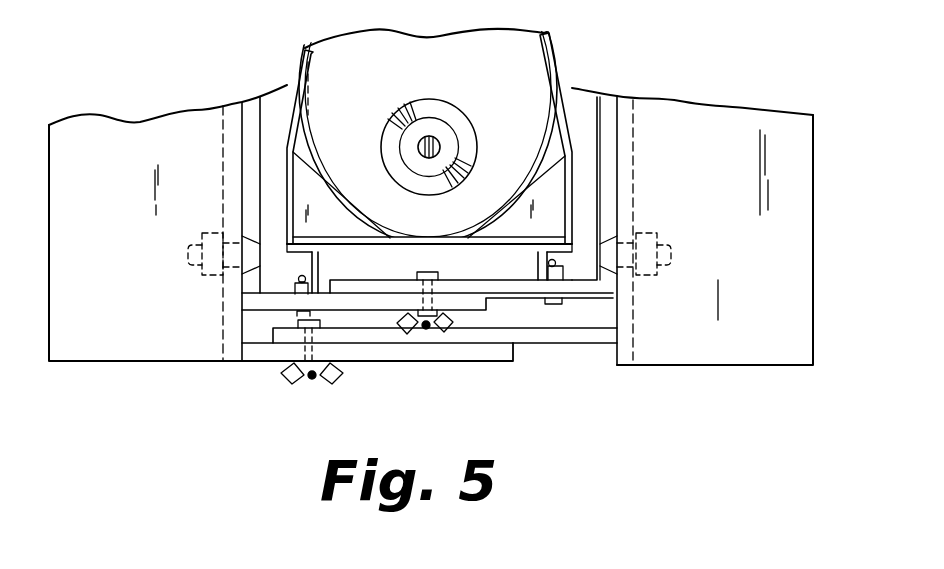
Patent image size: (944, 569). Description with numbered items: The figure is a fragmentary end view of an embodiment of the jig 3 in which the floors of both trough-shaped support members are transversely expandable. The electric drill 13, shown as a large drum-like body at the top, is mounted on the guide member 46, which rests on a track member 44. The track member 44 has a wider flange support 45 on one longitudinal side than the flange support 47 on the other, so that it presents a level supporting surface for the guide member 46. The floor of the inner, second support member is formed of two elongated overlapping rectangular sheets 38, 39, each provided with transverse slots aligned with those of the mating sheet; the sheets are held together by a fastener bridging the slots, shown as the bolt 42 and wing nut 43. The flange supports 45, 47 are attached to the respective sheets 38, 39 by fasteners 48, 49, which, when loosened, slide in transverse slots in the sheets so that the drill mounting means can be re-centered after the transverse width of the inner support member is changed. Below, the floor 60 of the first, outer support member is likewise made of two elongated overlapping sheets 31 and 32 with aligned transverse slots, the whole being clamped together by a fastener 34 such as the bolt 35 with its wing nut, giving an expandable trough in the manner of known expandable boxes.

The jig 3 is at (384, 372).
The electric drill 13 is at (540, 62).
The elongated overlapping sheet 31 is at (400, 350).
The elongated overlapping sheet 32 is at (580, 338).
The fastener 34 is at (384, 372).
The bolt 35 is at (308, 372).
The elongated overlapping rectangular sheet 38 is at (585, 283).
The elongated overlapping rectangular sheet 39 is at (252, 303).
The bolt 42 is at (433, 268).
The wing nut 43 is at (410, 327).
The track member 44 is at (413, 250).
The flange support 45 is at (315, 266).
The guide member 46 is at (413, 260).
The flange support 47 is at (537, 263).
The fastener 48 is at (567, 267).
The fastener 49 is at (303, 281).
The floor 60 is at (405, 388).